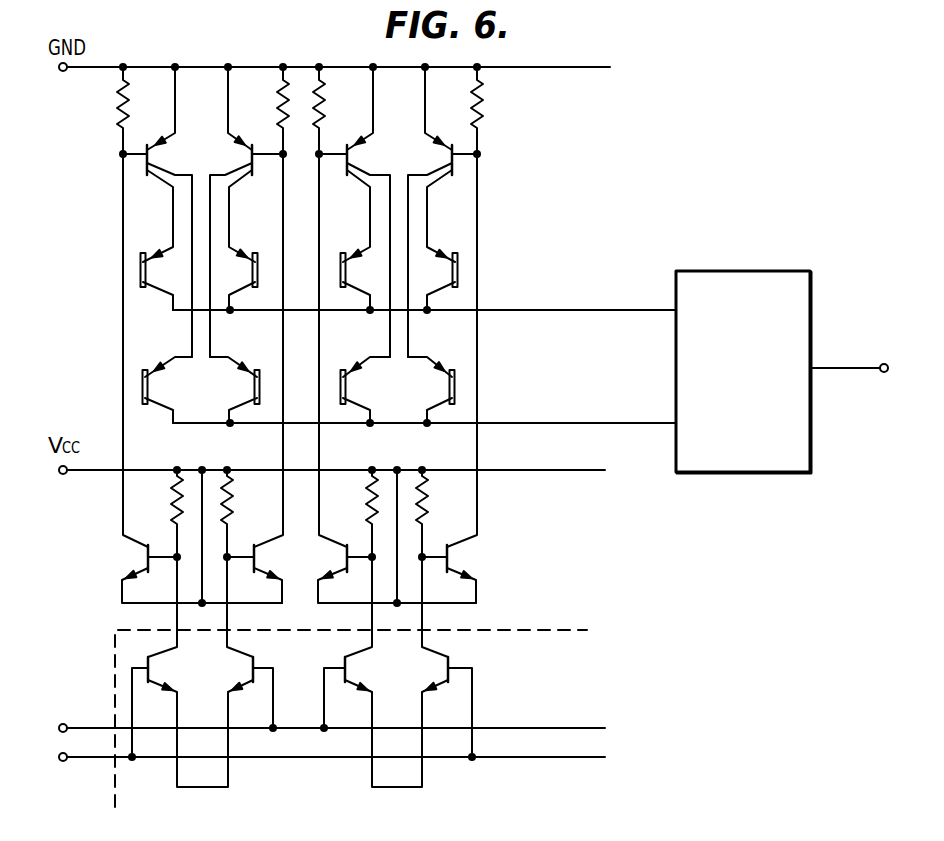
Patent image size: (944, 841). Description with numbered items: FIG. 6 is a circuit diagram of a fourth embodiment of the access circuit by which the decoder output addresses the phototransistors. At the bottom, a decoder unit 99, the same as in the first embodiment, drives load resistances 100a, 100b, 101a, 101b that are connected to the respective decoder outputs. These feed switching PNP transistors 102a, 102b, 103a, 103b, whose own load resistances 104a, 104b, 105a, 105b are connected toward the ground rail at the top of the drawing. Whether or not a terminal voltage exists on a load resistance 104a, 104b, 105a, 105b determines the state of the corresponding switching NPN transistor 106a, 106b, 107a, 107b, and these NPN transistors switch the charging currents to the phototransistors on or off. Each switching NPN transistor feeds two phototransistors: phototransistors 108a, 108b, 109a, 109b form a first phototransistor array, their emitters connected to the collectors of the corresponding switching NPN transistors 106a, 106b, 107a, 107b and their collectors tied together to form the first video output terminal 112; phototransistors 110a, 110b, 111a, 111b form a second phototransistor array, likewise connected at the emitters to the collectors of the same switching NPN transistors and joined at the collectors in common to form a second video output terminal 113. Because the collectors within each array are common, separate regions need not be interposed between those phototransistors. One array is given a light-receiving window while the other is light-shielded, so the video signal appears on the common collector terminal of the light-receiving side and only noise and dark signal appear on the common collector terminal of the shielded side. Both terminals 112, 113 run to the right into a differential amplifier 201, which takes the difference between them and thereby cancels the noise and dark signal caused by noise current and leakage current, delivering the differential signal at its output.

The decoder unit 99 is at (112, 692).
The load resistance 100a is at (172, 494).
The load resistance 100b is at (228, 505).
The load resistance 101a is at (368, 495).
The load resistance 101b is at (430, 517).
The switching PNP transistor 102a is at (133, 572).
The switching PNP transistor 102b is at (264, 568).
The switching PNP transistor 103a is at (327, 543).
The switching PNP transistor 103b is at (466, 545).
The load resistance 104a is at (116, 97).
The load resistance 104b is at (279, 97).
The load resistance 105a is at (327, 106).
The load resistance 105b is at (485, 98).
The switching NPN transistor 106a is at (167, 167).
The switching NPN transistor 106b is at (253, 178).
The switching NPN transistor 107a is at (346, 174).
The switching NPN transistor 107b is at (461, 175).
The phototransistor 108a is at (145, 275).
The phototransistor 108b is at (268, 245).
The phototransistor 109a is at (342, 262).
The phototransistor 109b is at (466, 247).
The phototransistor 110a is at (145, 369).
The phototransistor 110b is at (257, 369).
The phototransistor 111a is at (343, 369).
The phototransistor 111b is at (452, 369).
The first video output terminal 112 is at (513, 310).
The second video output terminal 113 is at (508, 427).
The differential amplifier 201 is at (742, 271).